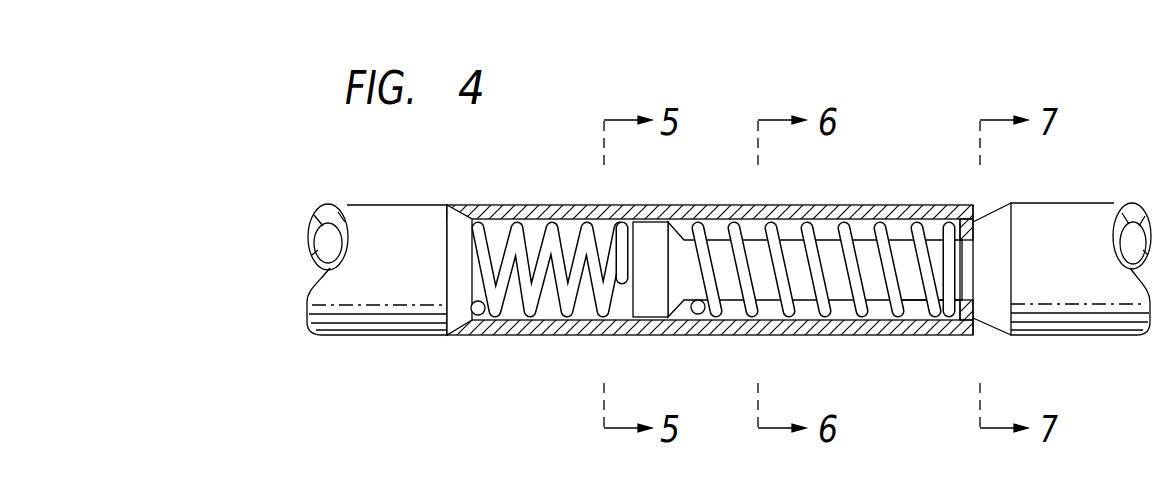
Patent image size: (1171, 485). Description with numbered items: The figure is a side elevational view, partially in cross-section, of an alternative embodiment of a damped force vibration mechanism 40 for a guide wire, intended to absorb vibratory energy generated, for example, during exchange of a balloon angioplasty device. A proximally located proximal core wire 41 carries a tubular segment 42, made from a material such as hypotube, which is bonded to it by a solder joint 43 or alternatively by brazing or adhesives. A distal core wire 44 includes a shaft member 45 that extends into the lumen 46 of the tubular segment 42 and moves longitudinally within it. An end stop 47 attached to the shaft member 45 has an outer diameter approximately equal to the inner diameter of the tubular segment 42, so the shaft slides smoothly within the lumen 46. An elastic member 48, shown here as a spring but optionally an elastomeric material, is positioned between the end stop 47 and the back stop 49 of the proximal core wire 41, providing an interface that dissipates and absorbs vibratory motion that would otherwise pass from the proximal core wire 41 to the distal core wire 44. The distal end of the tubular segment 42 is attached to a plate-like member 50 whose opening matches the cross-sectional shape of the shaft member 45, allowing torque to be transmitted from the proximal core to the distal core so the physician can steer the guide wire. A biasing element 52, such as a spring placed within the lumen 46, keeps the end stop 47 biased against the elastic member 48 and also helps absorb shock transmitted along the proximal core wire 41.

The damped force vibration mechanism 40 is at (728, 230).
The proximal core wire 41 is at (362, 205).
The tubular segment 42 is at (550, 326).
The solder joint 43 is at (466, 205).
The distal core wire 44 is at (1100, 226).
The shaft member 45 is at (840, 304).
The lumen 46 is at (912, 305).
The end stop 47 is at (652, 232).
The elastic member 48 is at (520, 230).
The back stop 49 is at (471, 302).
The plate-like member 50 is at (978, 205).
The biasing element 52 is at (797, 274).